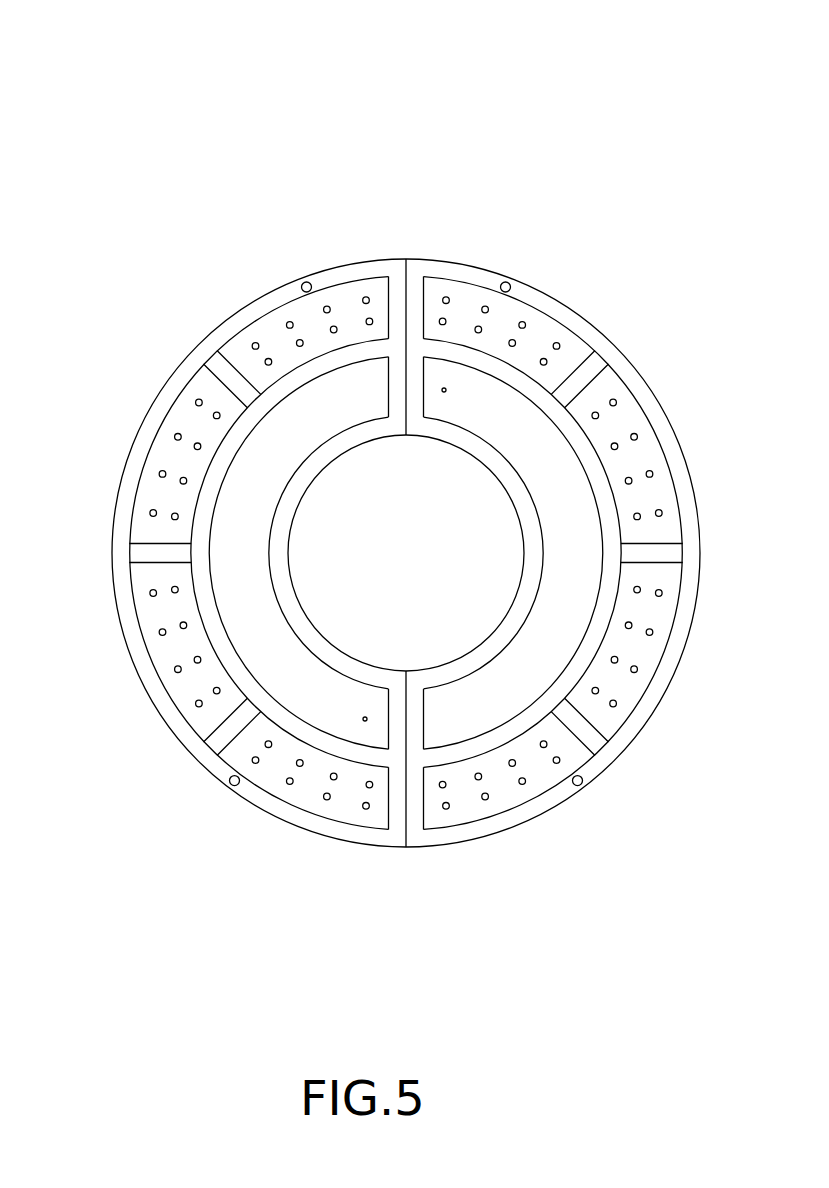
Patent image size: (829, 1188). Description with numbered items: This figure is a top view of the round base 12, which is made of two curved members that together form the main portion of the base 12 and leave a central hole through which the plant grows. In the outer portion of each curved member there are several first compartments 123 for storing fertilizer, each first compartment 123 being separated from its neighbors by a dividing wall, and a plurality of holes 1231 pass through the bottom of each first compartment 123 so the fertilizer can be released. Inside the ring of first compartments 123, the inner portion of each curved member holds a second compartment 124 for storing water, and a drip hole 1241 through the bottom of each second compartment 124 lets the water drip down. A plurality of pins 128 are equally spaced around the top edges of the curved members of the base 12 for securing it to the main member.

The round base 12 is at (572, 145).
The first compartment 123 is at (150, 615).
The holes 1231 is at (268, 362).
The second compartment 124 is at (263, 475).
The drip hole 1241 is at (446, 388).
The pins 128 is at (575, 786).